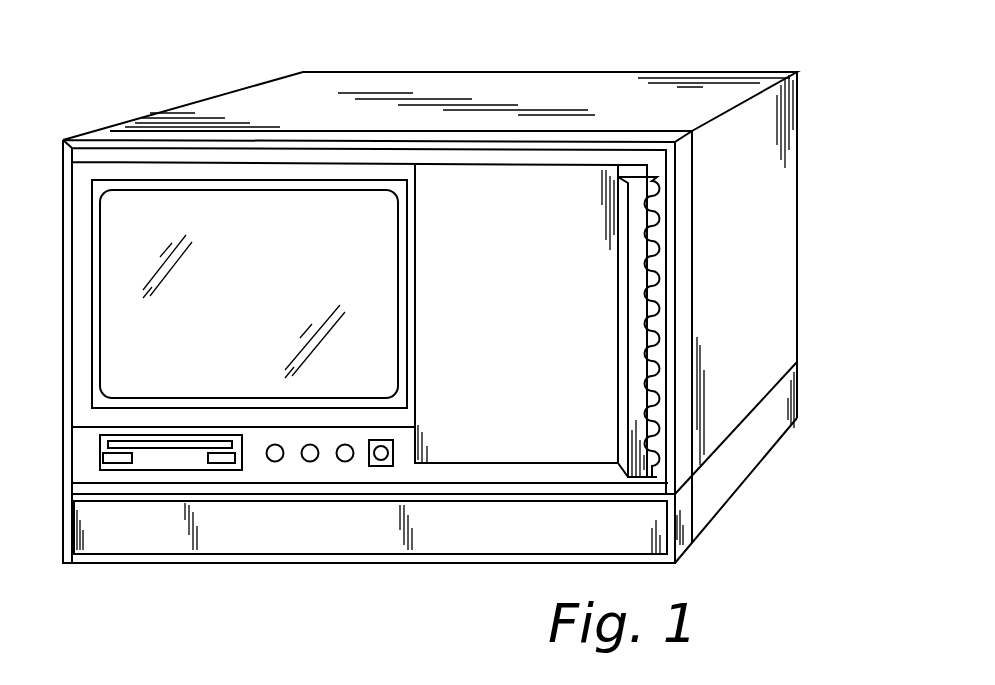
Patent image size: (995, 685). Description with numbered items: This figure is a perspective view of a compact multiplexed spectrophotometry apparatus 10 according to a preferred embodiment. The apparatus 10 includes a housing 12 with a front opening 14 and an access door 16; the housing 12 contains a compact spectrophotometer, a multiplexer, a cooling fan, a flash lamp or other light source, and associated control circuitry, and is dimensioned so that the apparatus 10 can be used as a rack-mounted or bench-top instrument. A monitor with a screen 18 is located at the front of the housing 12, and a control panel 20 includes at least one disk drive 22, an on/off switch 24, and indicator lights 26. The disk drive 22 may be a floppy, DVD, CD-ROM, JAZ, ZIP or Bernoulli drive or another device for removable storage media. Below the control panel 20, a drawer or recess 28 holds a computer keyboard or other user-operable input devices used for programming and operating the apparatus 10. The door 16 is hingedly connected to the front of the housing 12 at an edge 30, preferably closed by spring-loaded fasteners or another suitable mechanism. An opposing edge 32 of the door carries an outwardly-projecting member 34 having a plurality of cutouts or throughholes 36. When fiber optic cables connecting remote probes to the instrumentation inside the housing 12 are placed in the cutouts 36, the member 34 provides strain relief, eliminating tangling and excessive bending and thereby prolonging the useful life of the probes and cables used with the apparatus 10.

The multiplexed spectrophotometry apparatus 10 is at (839, 240).
The housing 12 is at (430, 71).
The front opening 14 is at (637, 165).
The access door 16 is at (532, 329).
The screen 18 is at (262, 309).
The control panel 20 is at (73, 445).
The disk drive 22 is at (100, 469).
The on/off switch 24 is at (384, 467).
The indicator lights 26 is at (275, 462).
The drawer or recess 28 is at (174, 554).
The edge 30 is at (411, 272).
The opposing edge 32 is at (617, 388).
The outwardly-projecting member 34 is at (658, 208).
The cutouts or throughholes 36 is at (650, 338).